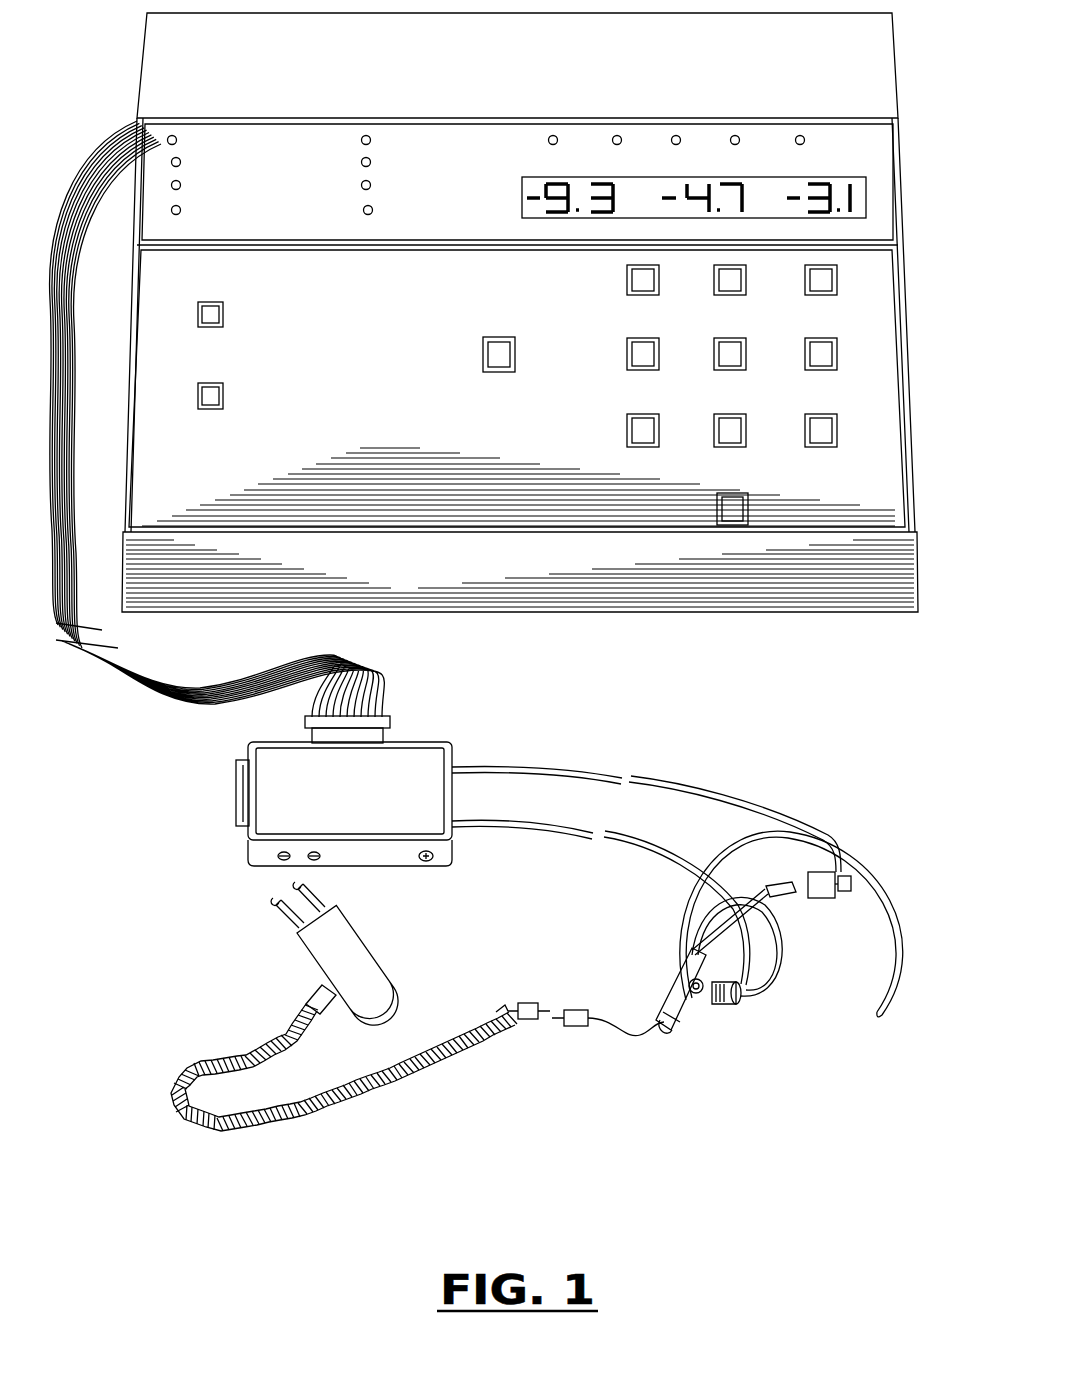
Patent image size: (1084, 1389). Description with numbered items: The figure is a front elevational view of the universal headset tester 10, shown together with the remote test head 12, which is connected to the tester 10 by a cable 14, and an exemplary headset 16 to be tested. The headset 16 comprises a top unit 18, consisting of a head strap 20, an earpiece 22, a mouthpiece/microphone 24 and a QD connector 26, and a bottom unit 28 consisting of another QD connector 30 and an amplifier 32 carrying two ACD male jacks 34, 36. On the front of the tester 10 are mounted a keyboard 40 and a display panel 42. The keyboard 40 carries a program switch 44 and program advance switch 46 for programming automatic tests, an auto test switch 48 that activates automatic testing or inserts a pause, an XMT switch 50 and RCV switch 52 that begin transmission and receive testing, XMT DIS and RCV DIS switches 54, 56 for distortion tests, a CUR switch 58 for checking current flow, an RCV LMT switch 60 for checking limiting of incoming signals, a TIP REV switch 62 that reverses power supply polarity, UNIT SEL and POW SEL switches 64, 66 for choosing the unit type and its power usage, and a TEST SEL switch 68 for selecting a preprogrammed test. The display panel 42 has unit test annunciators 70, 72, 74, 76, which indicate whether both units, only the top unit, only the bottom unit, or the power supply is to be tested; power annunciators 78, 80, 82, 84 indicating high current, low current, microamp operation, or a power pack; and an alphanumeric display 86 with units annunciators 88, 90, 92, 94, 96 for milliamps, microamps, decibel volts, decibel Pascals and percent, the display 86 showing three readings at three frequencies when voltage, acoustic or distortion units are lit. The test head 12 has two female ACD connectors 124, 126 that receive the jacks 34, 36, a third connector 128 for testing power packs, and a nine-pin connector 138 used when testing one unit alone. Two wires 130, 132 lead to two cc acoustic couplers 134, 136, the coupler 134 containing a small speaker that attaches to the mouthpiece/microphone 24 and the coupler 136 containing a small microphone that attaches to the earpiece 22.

The universal headset tester 10 is at (942, 86).
The remote test head 12 is at (369, 796).
The cable 14 is at (90, 662).
The headset 16 is at (923, 1042).
The top unit 18 is at (925, 1048).
The head strap 20 is at (893, 924).
The earpiece 22 is at (688, 1005).
The mouthpiece/microphone 24 is at (785, 888).
The QD connector 26 is at (570, 1008).
The bottom unit 28 is at (548, 1044).
The QD connector 30 is at (530, 1008).
The amplifier 32 is at (365, 948).
The ACD male jack 34 is at (272, 918).
The ACD male jack 36 is at (300, 892).
The keyboard 40 is at (358, 389).
The display panel 42 is at (880, 157).
The program switch 44 is at (223, 315).
The program advance switch 46 is at (223, 391).
The auto test switch 48 is at (483, 352).
The XMT switch 50 is at (627, 282).
The RCV switch 52 is at (746, 282).
The XMT DIS switch 54 is at (836, 282).
The RCV DIS switch 56 is at (627, 355).
The CUR switch 58 is at (746, 355).
The RCV LMT switch 60 is at (836, 355).
The TIP REV switch 62 is at (627, 435).
The UNIT SEL switch 64 is at (746, 435).
The POW SEL switch 66 is at (836, 435).
The TEST SEL switch 68 is at (748, 502).
The unit test annunciator 70 is at (172, 134).
The unit test annunciator 72 is at (171, 162).
The unit test annunciator 74 is at (171, 188).
The unit test annunciator 76 is at (177, 215).
The high current annunciator 78 is at (360, 140).
The low current annunciator 80 is at (360, 162).
The low power annunciator 82 is at (360, 185).
The power pack annunciator 84 is at (367, 216).
The alphanumeric display 86 is at (640, 192).
The MA annunciator 88 is at (553, 134).
The uA annunciator 90 is at (617, 134).
The dBV annunciator 92 is at (676, 134).
The dBPA annunciator 94 is at (735, 134).
The % annunciator 96 is at (800, 134).
The female ACD connector 124 is at (284, 849).
The female ACD connector 126 is at (314, 849).
The third connector 128 is at (426, 864).
The wire 130 is at (488, 767).
The wire 132 is at (488, 826).
The acoustic coupler 134 is at (826, 899).
The acoustic coupler 136 is at (736, 982).
The nine-pin connector 138 is at (237, 800).